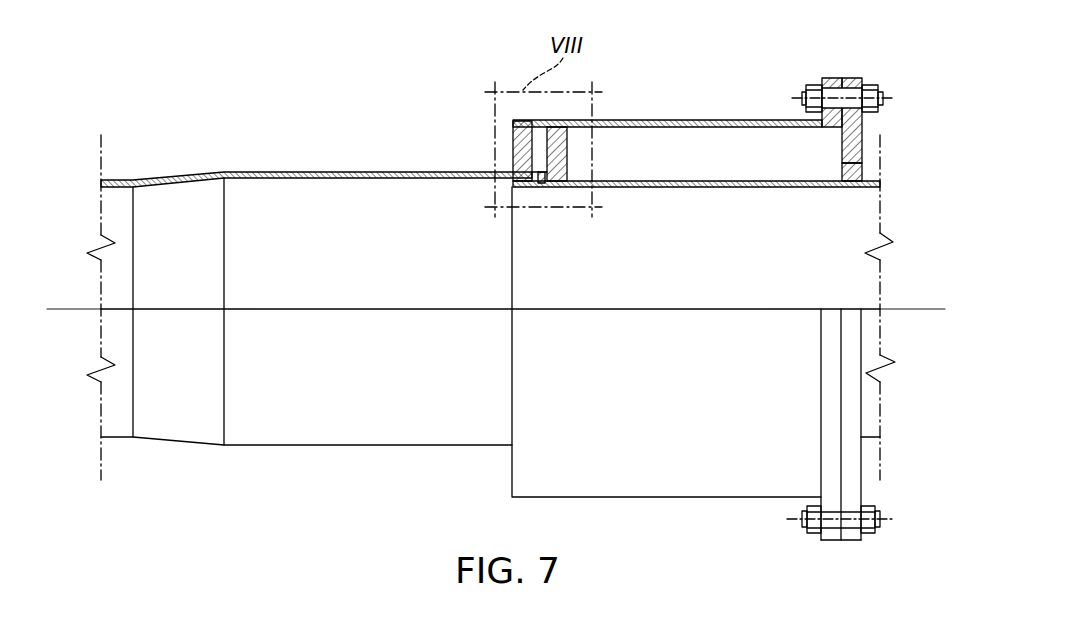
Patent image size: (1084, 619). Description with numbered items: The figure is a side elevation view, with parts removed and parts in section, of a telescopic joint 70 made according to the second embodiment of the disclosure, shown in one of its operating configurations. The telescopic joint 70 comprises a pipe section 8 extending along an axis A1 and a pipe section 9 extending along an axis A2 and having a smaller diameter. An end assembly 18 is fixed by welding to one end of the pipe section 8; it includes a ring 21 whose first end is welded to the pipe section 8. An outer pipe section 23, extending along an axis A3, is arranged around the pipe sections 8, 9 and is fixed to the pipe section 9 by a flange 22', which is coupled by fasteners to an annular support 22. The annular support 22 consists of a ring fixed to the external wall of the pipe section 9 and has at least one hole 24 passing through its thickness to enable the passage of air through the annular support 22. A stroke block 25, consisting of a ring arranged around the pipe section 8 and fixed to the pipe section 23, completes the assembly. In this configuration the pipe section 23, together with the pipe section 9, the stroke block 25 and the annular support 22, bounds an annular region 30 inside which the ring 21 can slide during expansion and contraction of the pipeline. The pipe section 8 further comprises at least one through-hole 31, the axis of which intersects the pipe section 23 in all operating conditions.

The telescopic joint 70 is at (358, 88).
The pipe section 8 is at (340, 172).
The pipe section 9 is at (762, 187).
The end assembly 18 is at (588, 162).
The ring 21 is at (560, 147).
The annular support 22 is at (871, 300).
The flange 22' is at (821, 278).
The pipe section 23 is at (730, 120).
The hole 24 is at (860, 160).
The stroke block 25 is at (512, 133).
The annular region 30 is at (788, 147).
The through-hole 31 is at (538, 183).
The axis A1 is at (77, 308).
The axis A2 is at (903, 312).
The axis A3 is at (900, 312).